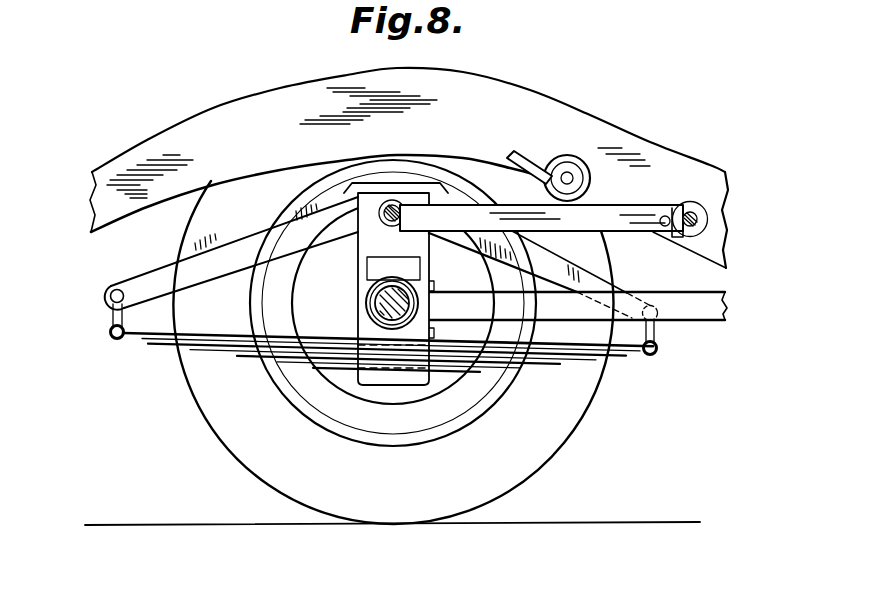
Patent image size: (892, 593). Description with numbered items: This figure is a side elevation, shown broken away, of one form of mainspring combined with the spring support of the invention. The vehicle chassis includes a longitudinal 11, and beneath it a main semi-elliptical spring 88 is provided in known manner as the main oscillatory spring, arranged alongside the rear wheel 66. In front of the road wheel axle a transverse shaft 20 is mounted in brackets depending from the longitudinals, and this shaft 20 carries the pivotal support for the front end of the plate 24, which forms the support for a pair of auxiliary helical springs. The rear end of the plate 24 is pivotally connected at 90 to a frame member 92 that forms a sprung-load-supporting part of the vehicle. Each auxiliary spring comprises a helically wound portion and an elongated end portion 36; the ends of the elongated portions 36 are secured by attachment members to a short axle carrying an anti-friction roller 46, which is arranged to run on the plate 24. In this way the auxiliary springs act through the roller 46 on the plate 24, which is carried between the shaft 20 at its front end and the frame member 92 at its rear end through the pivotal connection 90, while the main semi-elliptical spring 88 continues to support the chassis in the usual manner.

The longitudinal 11 is at (246, 98).
The transverse shaft 20 is at (689, 228).
The plate 24 is at (640, 204).
The elongated end portion 36 is at (523, 156).
The anti-friction roller 46 is at (582, 160).
The rear wheel 66 is at (232, 450).
The main semi-elliptical spring 88 is at (163, 343).
The pivotal connection 90 is at (386, 221).
The frame member 92 is at (162, 268).